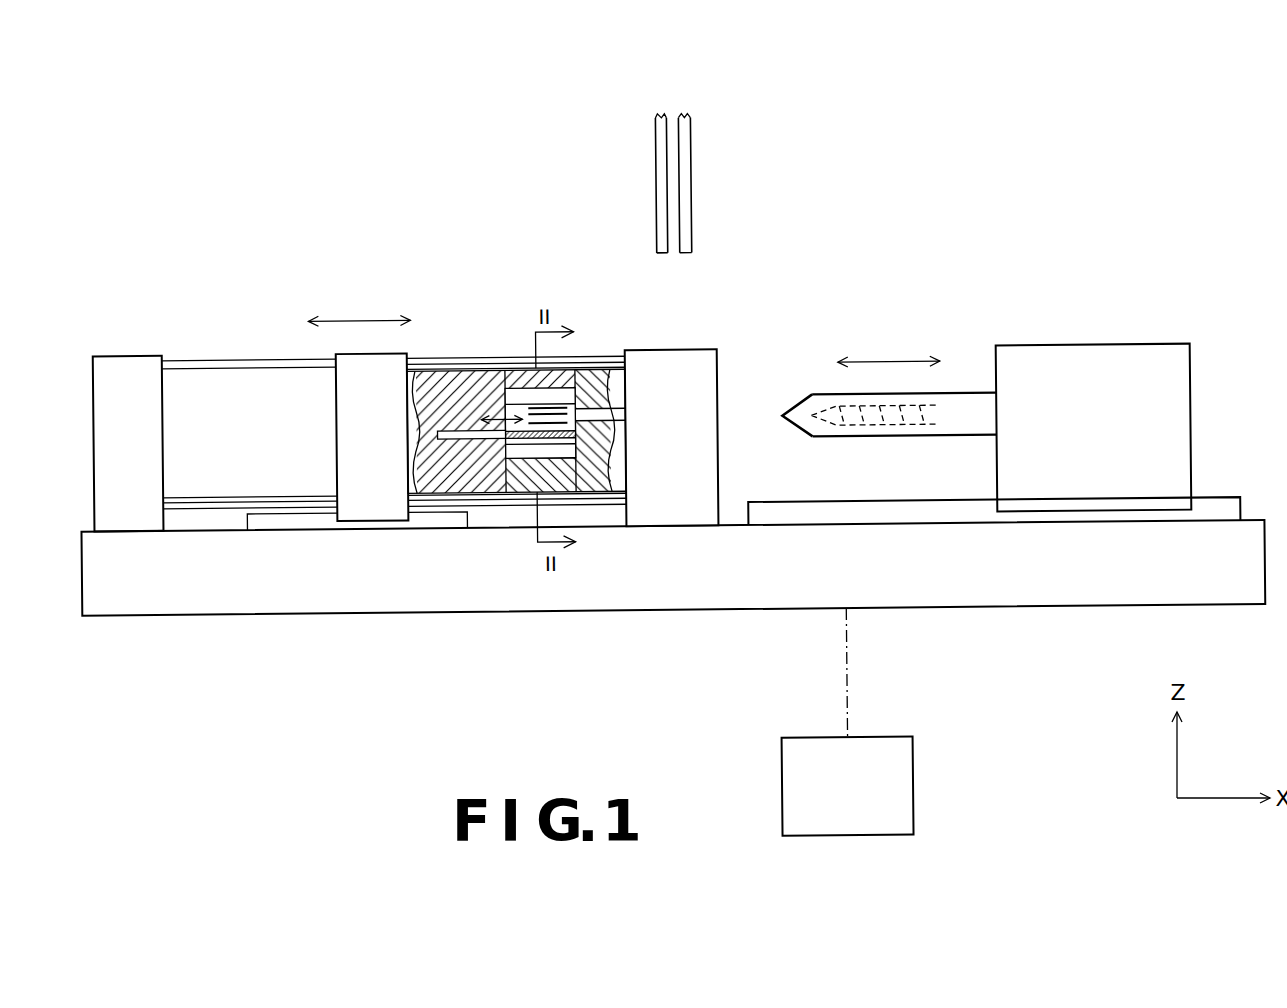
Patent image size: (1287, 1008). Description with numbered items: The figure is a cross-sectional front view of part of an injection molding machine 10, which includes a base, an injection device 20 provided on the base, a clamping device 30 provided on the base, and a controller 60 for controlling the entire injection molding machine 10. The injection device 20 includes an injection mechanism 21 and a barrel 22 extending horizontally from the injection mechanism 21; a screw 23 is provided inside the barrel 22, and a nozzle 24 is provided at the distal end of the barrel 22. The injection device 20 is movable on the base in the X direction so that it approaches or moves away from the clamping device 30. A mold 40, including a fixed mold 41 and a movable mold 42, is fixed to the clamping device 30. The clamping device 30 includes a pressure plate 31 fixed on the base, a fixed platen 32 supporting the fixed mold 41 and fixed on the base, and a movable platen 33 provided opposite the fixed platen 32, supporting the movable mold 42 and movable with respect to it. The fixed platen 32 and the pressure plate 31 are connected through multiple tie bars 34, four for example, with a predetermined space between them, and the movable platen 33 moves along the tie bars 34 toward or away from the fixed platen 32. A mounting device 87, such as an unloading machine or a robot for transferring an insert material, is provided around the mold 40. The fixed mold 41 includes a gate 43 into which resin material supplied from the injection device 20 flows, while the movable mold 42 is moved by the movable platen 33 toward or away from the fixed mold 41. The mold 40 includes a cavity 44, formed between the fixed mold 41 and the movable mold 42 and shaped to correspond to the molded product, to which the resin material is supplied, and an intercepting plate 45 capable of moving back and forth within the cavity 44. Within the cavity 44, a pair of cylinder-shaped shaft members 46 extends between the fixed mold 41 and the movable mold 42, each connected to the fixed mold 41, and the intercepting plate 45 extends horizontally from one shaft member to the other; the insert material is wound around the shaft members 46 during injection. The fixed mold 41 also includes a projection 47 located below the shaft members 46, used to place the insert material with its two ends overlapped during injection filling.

The injection molding machine 10 is at (1158, 187).
The injection device 20 is at (1060, 289).
The injection mechanism 21 is at (1164, 393).
The barrel 22 is at (971, 411).
The screw 23 is at (872, 423).
The nozzle 24 is at (783, 417).
The clamping device 30 is at (300, 268).
The pressure plate 31 is at (126, 373).
The fixed platen 32 is at (677, 367).
The movable platen 33 is at (353, 419).
The tie bars 34 is at (215, 359).
The mold 40 is at (465, 265).
The fixed mold 41 is at (596, 384).
The movable mold 42 is at (482, 381).
The gate 43 is at (578, 412).
The cavity 44 is at (550, 449).
The intercepting plate 45 is at (573, 459).
The shaft members 46 is at (559, 421).
The projection 47 is at (535, 472).
The controller 60 is at (910, 785).
The mounting device 87 is at (703, 168).